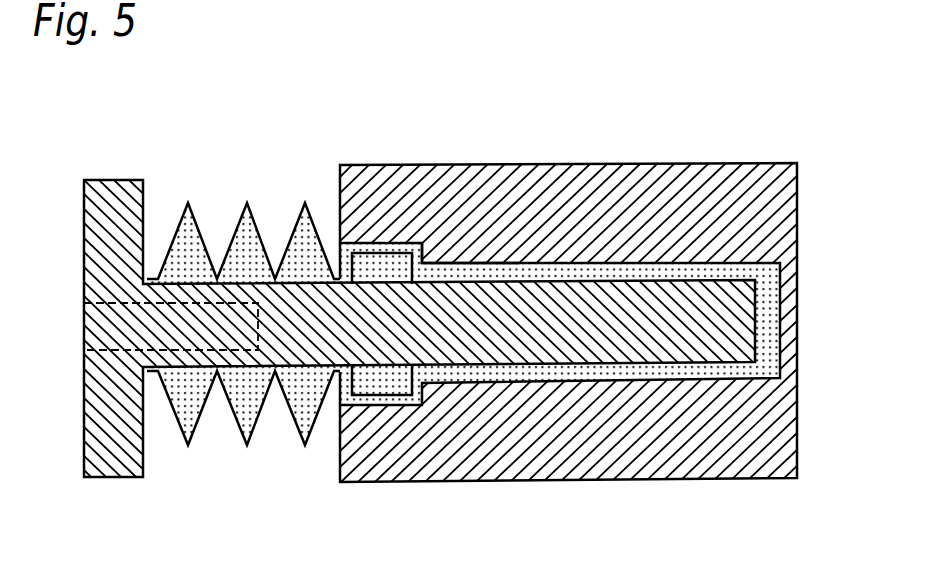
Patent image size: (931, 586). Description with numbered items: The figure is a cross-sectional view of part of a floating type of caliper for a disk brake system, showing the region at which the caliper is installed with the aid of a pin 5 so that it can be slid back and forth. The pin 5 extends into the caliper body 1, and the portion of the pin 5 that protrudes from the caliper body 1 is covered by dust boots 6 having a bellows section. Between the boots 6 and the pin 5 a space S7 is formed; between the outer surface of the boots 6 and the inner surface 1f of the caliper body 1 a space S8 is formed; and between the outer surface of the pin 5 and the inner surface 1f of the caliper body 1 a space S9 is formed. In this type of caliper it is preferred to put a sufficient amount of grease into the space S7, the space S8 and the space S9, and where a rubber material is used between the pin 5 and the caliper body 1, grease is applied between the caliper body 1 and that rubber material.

The caliper body 1 is at (643, 207).
The inner surface of caliper body 1f is at (447, 248).
The pin 5 is at (728, 320).
The dust boots 6 is at (296, 225).
The space between boots and pin S7 is at (180, 248).
The space between outer surface of boots and inner surface of caliper body S8 is at (365, 250).
The space between outer surface of pin and inner surface of caliper body S9 is at (683, 273).